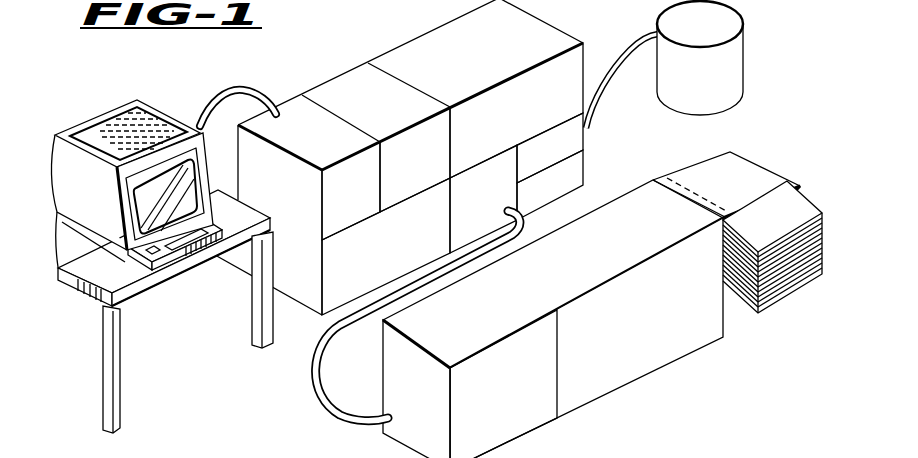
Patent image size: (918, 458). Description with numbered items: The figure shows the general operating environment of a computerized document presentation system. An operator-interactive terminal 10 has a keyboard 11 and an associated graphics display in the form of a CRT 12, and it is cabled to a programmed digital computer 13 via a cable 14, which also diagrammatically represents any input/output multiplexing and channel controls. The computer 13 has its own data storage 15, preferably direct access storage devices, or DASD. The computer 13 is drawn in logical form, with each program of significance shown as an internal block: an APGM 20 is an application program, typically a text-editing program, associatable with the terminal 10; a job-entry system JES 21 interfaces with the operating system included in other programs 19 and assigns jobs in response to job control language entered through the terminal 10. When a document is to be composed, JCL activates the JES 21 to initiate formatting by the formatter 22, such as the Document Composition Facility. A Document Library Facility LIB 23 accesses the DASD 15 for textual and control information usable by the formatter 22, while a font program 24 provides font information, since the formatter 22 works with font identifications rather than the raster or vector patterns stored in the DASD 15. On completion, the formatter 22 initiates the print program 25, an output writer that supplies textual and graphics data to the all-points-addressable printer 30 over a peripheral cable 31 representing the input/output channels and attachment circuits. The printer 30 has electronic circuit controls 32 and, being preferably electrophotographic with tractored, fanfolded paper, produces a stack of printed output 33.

The operator-interactive terminal 10 is at (162, 248).
The keyboard 11 is at (218, 224).
The CRT 12 is at (192, 178).
The programmed digital computer 13 is at (419, 157).
The cable 14 is at (249, 82).
The data storage 15 is at (712, 103).
The other programs 19 is at (384, 276).
The APGM 20 is at (362, 201).
The JES 21 is at (394, 189).
The formatter 22 is at (463, 146).
The LIB 23 is at (584, 143).
The font program 24 is at (582, 175).
The print program 25 is at (464, 229).
The all-points-addressable printer 30 is at (553, 319).
The peripheral cable 31 is at (318, 372).
The electronic circuit controls 32 is at (503, 431).
The stack of printed output 33 is at (777, 183).